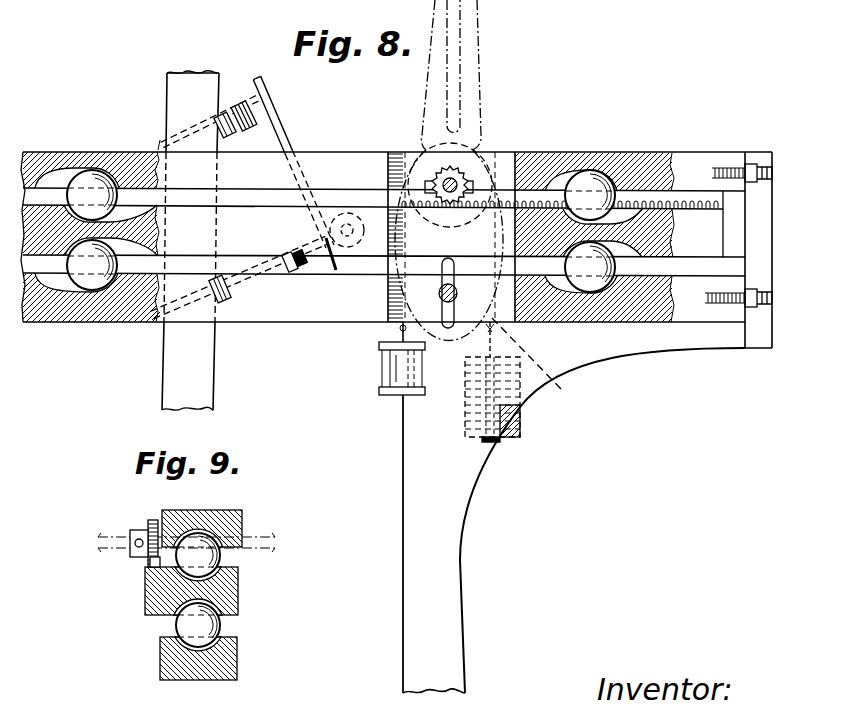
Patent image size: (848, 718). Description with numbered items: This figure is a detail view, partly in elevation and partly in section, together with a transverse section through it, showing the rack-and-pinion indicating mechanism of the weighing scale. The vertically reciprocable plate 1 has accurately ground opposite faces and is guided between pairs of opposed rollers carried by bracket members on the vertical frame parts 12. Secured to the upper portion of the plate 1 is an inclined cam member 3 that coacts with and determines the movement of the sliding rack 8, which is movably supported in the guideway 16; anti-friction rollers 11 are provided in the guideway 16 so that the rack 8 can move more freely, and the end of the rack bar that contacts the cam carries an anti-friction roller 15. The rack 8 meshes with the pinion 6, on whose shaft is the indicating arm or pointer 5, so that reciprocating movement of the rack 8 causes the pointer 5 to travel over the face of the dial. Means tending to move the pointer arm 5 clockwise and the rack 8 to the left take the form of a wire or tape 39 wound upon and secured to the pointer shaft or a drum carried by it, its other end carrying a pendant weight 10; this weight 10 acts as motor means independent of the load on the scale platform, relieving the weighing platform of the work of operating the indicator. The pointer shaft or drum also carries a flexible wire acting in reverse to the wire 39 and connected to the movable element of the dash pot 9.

In FIG. 8, the vertically reciprocable plate 1 is at (178, 88).
In FIG. 8, the connecting rod 3 is at (264, 133).
In FIG. 8, the indicating arm or pointer 5 is at (468, 83).
In FIG. 8, the pinion 6 is at (433, 166).
In FIG. 9, the pinion 6 is at (152, 522).
In FIG. 8, the sliding rack 8 is at (696, 204).
In FIG. 9, the sliding rack 8 is at (147, 562).
In FIG. 8, the dash pot 9 is at (384, 373).
In FIG. 8, the pendant weight 10 is at (521, 418).
In FIG. 8, the anti-friction rollers 11 is at (92, 180).
In FIG. 9, the anti-friction rollers 11 is at (212, 555).
In FIG. 8, the vertical frame parts 12 is at (447, 480).
In FIG. 8, the roller 15 is at (347, 203).
In FIG. 8, the guideway 16 is at (625, 155).
In FIG. 9, the guideway 16 is at (242, 522).
In FIG. 8, the wire or tape 39 is at (538, 364).